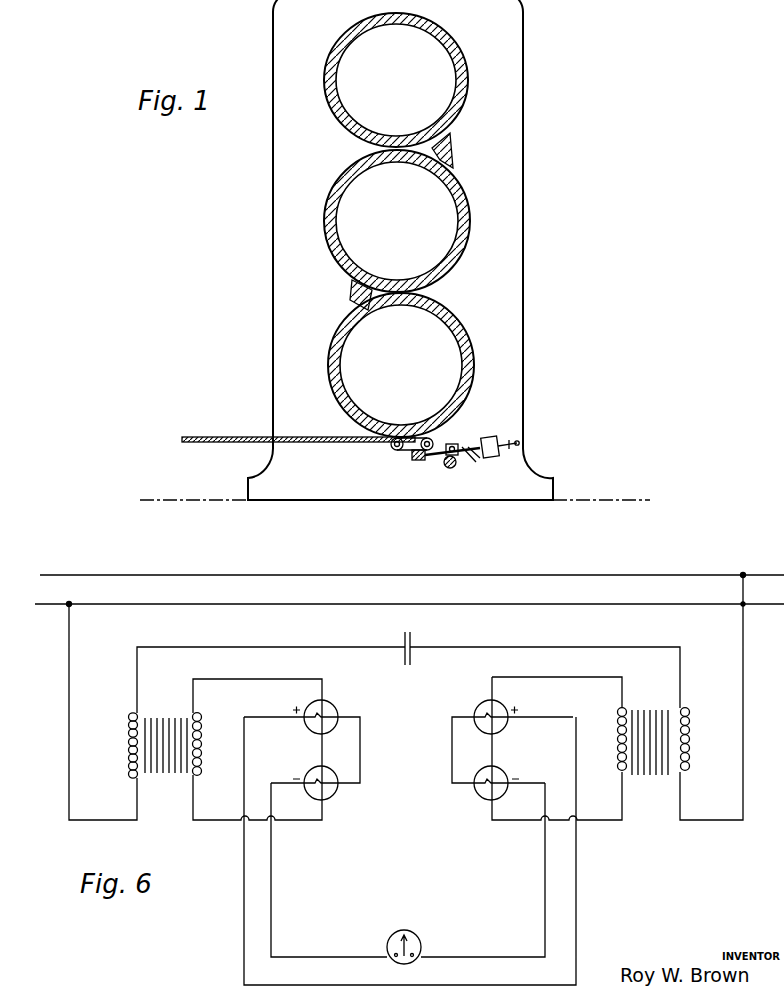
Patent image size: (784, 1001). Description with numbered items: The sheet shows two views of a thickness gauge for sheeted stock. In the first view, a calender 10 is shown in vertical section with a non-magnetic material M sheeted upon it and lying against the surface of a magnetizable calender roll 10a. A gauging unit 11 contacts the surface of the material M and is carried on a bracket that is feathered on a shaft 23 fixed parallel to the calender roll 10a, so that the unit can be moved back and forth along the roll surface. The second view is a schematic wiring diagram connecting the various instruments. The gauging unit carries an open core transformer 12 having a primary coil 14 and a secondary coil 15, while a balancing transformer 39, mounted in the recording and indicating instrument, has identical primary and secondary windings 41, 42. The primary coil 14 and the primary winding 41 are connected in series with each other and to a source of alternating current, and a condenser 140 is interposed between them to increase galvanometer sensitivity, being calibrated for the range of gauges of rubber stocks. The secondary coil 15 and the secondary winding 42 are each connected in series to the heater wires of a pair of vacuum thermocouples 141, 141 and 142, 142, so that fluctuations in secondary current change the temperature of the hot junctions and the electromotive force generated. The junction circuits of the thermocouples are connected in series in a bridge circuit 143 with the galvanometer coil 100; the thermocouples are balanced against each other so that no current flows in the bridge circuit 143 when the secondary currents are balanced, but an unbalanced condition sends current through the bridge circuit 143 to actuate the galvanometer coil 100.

In FIG. 1, the calender 10 is at (523, 143).
In FIG. 1, the magnetizable calender roll 10a is at (470, 353).
In FIG. 1, the gauging unit 11 is at (488, 427).
In FIG. 1, the shaft 23 is at (449, 468).
In FIG. 1, the non-magnetic material M is at (190, 437).
In FIG. 6, the open core transformer 12 is at (165, 713).
In FIG. 6, the primary coil 14 is at (129, 768).
In FIG. 6, the secondary coil 15 is at (204, 757).
In FIG. 6, the condenser 140 is at (412, 643).
In FIG. 6, the vacuum thermocouples 141 is at (339, 709).
In FIG. 6, the vacuum thermocouples 142 is at (472, 708).
In FIG. 6, the bridge circuit 143 is at (272, 915).
In FIG. 6, the galvanometer coil 100 is at (420, 938).
In FIG. 6, the balancing transformer 39 is at (655, 706).
In FIG. 6, the primary winding 41 is at (691, 738).
In FIG. 6, the secondary winding 42 is at (612, 732).